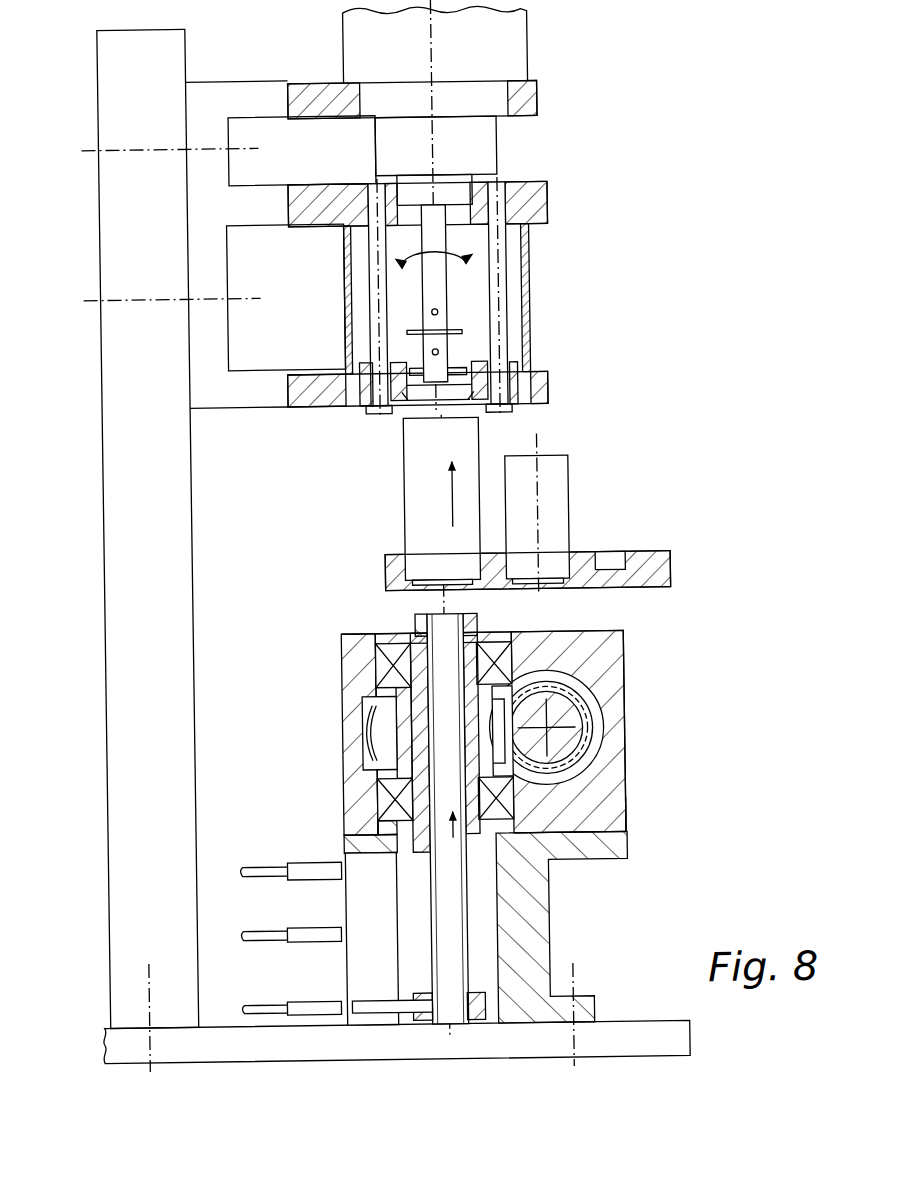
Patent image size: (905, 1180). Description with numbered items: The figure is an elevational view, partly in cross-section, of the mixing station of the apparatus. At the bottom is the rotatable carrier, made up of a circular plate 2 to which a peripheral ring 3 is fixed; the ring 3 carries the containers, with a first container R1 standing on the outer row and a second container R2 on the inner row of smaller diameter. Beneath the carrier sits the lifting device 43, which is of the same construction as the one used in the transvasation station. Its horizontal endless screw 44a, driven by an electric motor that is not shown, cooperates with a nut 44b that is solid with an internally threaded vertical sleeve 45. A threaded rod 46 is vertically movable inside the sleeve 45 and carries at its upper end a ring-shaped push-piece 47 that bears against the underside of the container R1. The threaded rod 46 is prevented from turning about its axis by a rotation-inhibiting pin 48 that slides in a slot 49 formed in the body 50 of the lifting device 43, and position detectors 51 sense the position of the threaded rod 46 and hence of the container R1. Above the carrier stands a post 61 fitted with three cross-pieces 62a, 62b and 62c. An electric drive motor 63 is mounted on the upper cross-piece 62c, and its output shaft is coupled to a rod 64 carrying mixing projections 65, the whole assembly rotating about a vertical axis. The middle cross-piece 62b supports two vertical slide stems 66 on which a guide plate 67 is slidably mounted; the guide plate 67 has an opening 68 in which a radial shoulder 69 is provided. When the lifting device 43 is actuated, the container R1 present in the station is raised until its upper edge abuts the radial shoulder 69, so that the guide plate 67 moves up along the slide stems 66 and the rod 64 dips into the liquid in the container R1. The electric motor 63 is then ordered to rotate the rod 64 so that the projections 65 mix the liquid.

The circular plate 2 is at (672, 568).
The peripheral ring 3 is at (395, 575).
The lifting device 43 is at (636, 779).
The horizontal endless screw 44a is at (568, 712).
The nut 44b is at (368, 768).
The internally threaded vertical sleeve 45 is at (422, 828).
The threaded rod 46 is at (455, 906).
The ring-shaped push-piece 47 is at (474, 621).
The rotation-inhibiting pin 48 is at (377, 1005).
The slot 49 is at (358, 888).
The body 50 is at (636, 833).
The position detectors 51 is at (312, 864).
The post 61 is at (97, 650).
The cross-piece 62a is at (548, 392).
The cross-piece 62b is at (530, 200).
The cross-piece 62c is at (530, 97).
The electric drive motor 63 is at (515, 27).
The rod 64 is at (444, 285).
The mixing projections 65 is at (463, 333).
The vertical slide stems 66 is at (372, 296).
The guide plate 67 is at (346, 405).
The opening 68 is at (398, 405).
The radial shoulder 69 is at (415, 398).
The first container R1 is at (410, 543).
The second container R2 is at (562, 527).